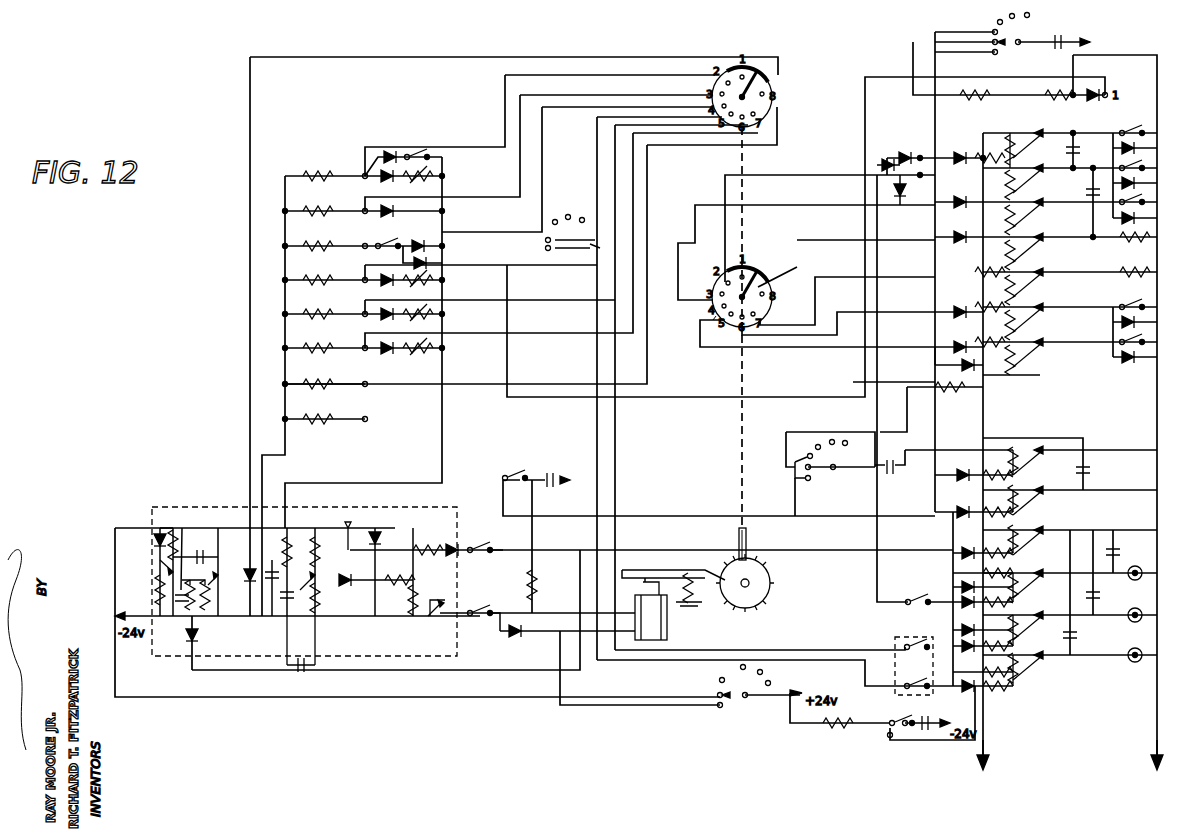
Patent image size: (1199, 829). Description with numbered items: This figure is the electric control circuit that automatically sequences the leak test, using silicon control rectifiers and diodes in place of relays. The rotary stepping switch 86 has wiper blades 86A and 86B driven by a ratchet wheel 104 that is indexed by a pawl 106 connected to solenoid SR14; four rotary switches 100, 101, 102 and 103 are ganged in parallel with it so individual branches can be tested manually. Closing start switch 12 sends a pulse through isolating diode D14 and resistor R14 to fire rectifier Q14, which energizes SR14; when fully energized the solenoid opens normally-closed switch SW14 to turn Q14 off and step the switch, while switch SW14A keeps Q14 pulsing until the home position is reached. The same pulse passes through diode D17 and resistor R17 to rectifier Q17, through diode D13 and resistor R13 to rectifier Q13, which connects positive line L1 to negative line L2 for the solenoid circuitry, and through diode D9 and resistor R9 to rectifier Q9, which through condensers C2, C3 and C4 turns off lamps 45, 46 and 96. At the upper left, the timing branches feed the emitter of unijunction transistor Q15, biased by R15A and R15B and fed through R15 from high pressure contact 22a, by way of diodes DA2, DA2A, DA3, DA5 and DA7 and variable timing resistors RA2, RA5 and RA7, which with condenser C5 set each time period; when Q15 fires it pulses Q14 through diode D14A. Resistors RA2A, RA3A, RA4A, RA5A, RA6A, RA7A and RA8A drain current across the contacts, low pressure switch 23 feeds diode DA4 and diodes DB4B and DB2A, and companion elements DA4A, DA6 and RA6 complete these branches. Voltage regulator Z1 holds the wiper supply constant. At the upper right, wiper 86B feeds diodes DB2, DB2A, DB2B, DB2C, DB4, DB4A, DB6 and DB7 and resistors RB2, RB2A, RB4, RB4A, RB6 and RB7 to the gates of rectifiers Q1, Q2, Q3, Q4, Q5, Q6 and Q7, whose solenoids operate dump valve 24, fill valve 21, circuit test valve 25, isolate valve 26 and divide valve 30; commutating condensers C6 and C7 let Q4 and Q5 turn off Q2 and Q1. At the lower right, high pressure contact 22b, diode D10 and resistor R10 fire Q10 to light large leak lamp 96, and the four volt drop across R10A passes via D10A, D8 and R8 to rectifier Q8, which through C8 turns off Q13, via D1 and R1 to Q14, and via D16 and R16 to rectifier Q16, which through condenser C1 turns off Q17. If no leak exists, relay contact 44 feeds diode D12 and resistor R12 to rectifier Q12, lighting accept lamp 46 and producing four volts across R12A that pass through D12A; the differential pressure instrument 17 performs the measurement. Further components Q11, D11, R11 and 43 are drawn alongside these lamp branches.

The resistor RA2A is at (326, 172).
The resistor RA3A is at (325, 207).
The resistor RA4A is at (325, 242).
The resistor RA5A is at (325, 277).
The resistor RA6A is at (325, 311).
The resistor RA7A is at (325, 345).
The resistor RA8A is at (325, 392).
The isolating diode DA2 is at (388, 152).
The normally-open contacts 22a is at (423, 152).
The isolating diode DA2A is at (395, 180).
The variable timing resistor RA2 is at (430, 170).
The isolating diode DA3 is at (396, 212).
The low pressure switch 23 is at (388, 238).
The diode DA4A is at (430, 245).
The diode DA4 is at (430, 262).
The isolating diode DA5 is at (403, 288).
The variable timer series resistor RA5 is at (432, 284).
The variable resistor RA6 is at (420, 320).
The diode DA6 is at (385, 320).
The variable resistor RA7 is at (432, 352).
The isolating diode DA7 is at (388, 356).
The wiper blade 86A is at (752, 78).
The wiper blade 86B is at (748, 286).
The stepping switch 86 is at (712, 318).
The rotary switch 101 is at (566, 262).
The rotary switch 100 is at (985, 22).
The isolating diode DB4B is at (880, 155).
The isolating diode DB2 is at (905, 152).
The isolating diode DB2A is at (958, 150).
The diode DB2B is at (890, 200).
The diode DB2C is at (959, 208).
The isolating diode DB4 is at (959, 239).
The isolating diode DB4A is at (940, 308).
The isolating diode DB6 is at (950, 340).
The isolating diode DB7 is at (958, 368).
The series resistor RB2 is at (1005, 140).
The series resistor RB2A is at (990, 175).
The resistor RB4 is at (990, 270).
The resistor RB4A is at (985, 310).
The series resistor RB6 is at (983, 356).
The series resistance RB7 is at (1012, 372).
The silicon control rectifier Q1 is at (1045, 130).
The silicon control rectifier Q2 is at (1039, 169).
The silicon control rectifier Q3 is at (1039, 203).
The silicon control rectifier Q4 is at (1039, 238).
The silicon control rectifier Q5 is at (1039, 273).
The silicon control rectifier Q6 is at (1039, 308).
The silicon control rectifier Q7 is at (1039, 343).
The commutator condenser C7 is at (1085, 151).
The commutating condenser C6 is at (1103, 203).
The dump valve 24 is at (1140, 133).
The fill valve 21 is at (1140, 168).
The circuit test valve 25 is at (1140, 202).
The isolate valve 26 is at (1140, 307).
The divide valve 30 is at (1140, 342).
The rotary switch 102 is at (803, 440).
The silicon control rectifier Q13 is at (1043, 440).
The series resistor R13 is at (1000, 462).
The isolating diode D13 is at (953, 466).
The silicon control rectifier Q8 is at (1039, 487).
The commutator condenser C8 is at (1097, 470).
The isolating diode D8 is at (950, 505).
The resistor R8 is at (990, 508).
The isolating diode D9 is at (968, 543).
The resistor R9 is at (1000, 541).
The silicon control rectifier Q9 is at (1048, 525).
The silicon control rectifier Q10 is at (1041, 571).
The isolating diode D10A is at (965, 580).
The resistance R10A is at (1014, 580).
The isolating diode D10 is at (960, 598).
The series resistor R10 is at (1014, 605).
The commutator condenser C2 is at (1121, 550).
The large leak lamp 96 is at (1145, 570).
The transistor Q11 is at (1041, 612).
The commutator condenser C3 is at (1105, 600).
The indicating lamp 45 is at (1145, 612).
The normally-closed contact 22b is at (905, 600).
The diode D11 is at (960, 640).
The isolating diode D12A is at (962, 655).
The resistor R11 is at (1013, 636).
The silicon control rectifier Q12 is at (1041, 653).
The commutating condenser C4 is at (1088, 638).
The accept lamp 46 is at (1145, 655).
The switch 43 is at (914, 666).
The series resistor R12A is at (1015, 670).
The differential pressure measuring instrument 17 is at (895, 690).
The normally-closed relay contact 44 is at (915, 690).
The isolating diode D12 is at (967, 696).
The series resistance R12 is at (998, 690).
The negative line L2 is at (990, 738).
The positive line L1 is at (1160, 735).
The start switch 12 is at (503, 476).
The switch SW14A is at (494, 561).
The normally-closed switch SW14 is at (485, 622).
The solenoid SR14 is at (668, 625).
The pawl 106 is at (690, 575).
The ratchet wheel 104 is at (768, 598).
The rotary switch 103 is at (741, 718).
The isolating diode D17 is at (155, 530).
The series resistor R17 is at (150, 540).
The silicon rectifier Q17 is at (170, 560).
The commutating condenser C1 is at (210, 530).
The silicon control rectifier Q16 is at (227, 568).
The voltage regulator Z1 is at (250, 585).
The series resistance R16 is at (192, 622).
The isolating diode D16 is at (190, 640).
The condenser C5 is at (287, 600).
The resistance R15 is at (287, 551).
The biasing resistor R15A is at (334, 543).
The unijunction transistor Q15 is at (324, 575).
The discharge resistor R15B is at (318, 625).
The isolating diode D14 is at (381, 533).
The series resistance R1 is at (430, 542).
The isolating diode D1 is at (446, 553).
The series resistor R14 is at (382, 570).
The isolating diode D14A is at (360, 588).
The silicon control rectifier Q14 is at (440, 630).